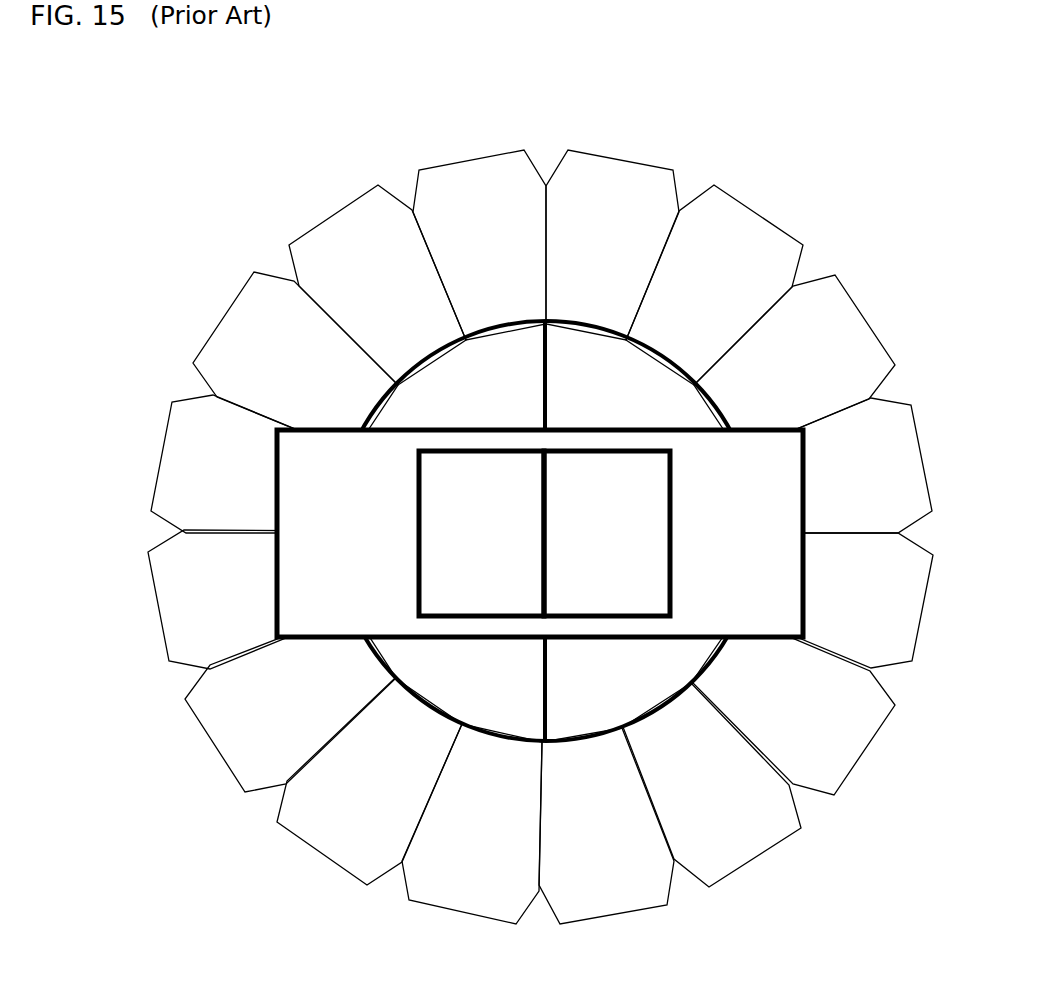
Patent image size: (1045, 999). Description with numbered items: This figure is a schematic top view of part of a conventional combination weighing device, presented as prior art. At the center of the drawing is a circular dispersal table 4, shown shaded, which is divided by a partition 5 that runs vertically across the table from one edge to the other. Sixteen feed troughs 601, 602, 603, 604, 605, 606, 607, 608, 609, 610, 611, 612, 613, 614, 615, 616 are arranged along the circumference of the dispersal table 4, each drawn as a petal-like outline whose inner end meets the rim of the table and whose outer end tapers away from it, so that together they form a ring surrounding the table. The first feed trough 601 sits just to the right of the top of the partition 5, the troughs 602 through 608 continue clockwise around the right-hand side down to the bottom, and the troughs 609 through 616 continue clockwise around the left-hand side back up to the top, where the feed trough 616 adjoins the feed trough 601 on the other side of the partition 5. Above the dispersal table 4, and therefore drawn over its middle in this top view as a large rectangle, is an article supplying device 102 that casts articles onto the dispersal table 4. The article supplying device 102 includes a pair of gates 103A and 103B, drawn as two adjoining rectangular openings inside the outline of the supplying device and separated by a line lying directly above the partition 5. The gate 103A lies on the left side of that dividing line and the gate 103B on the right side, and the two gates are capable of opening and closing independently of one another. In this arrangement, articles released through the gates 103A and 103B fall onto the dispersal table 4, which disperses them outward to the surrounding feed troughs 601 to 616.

The dispersal table 4 is at (663, 395).
The partition 5 is at (548, 395).
The article supplying device 102 is at (755, 475).
The gate 103A is at (455, 510).
The gate 103B is at (645, 525).
The feed trough 601 is at (578, 256).
The feed trough 602 is at (685, 291).
The feed trough 603 is at (767, 372).
The feed trough 604 is at (827, 503).
The feed trough 605 is at (827, 609).
The feed trough 606 is at (777, 715).
The feed trough 607 is at (681, 810).
The feed trough 608 is at (572, 870).
The feed trough 609 is at (451, 870).
The feed trough 610 is at (332, 796).
The feed trough 611 is at (237, 725).
The feed trough 612 is at (181, 609).
The feed trough 613 is at (181, 489).
The feed trough 614 is at (243, 371).
The feed trough 615 is at (339, 288).
The feed trough 616 is at (457, 242).